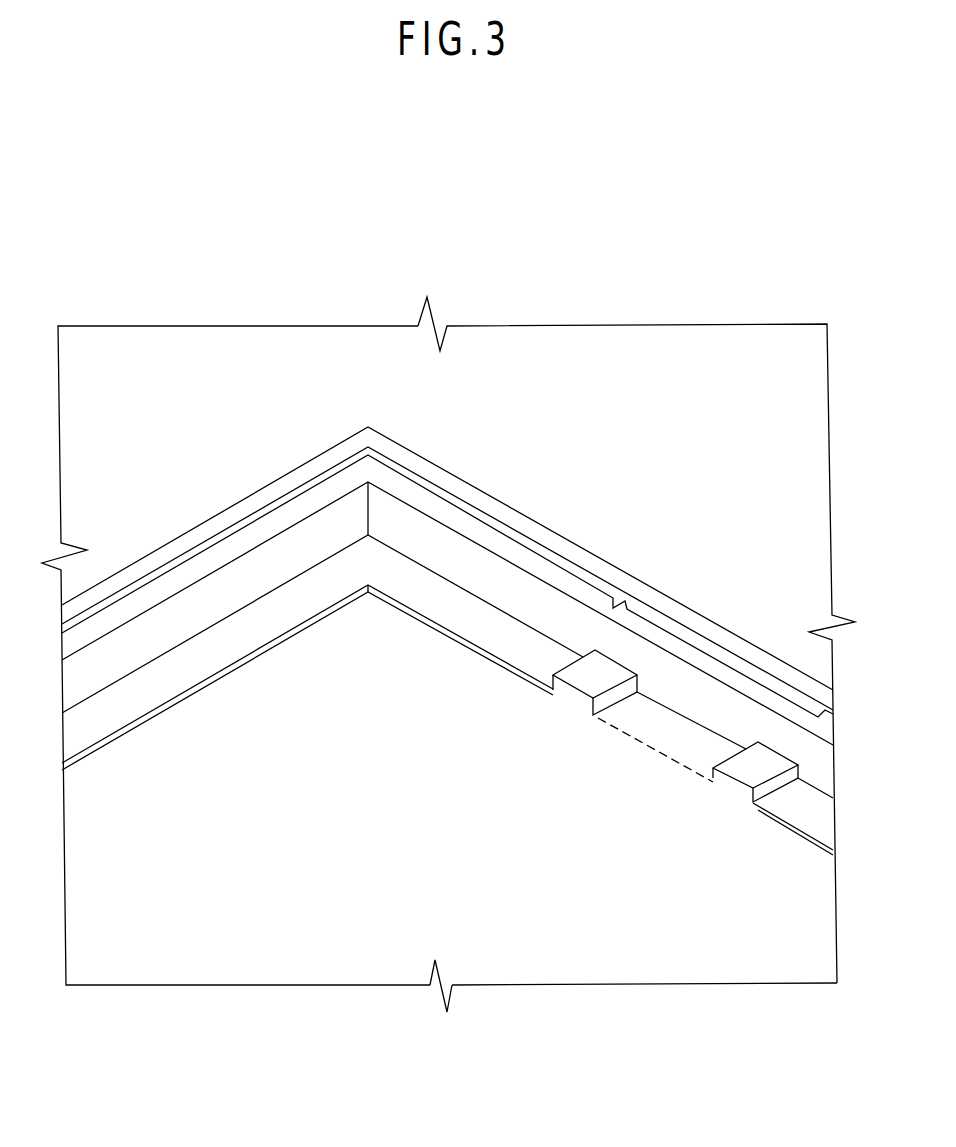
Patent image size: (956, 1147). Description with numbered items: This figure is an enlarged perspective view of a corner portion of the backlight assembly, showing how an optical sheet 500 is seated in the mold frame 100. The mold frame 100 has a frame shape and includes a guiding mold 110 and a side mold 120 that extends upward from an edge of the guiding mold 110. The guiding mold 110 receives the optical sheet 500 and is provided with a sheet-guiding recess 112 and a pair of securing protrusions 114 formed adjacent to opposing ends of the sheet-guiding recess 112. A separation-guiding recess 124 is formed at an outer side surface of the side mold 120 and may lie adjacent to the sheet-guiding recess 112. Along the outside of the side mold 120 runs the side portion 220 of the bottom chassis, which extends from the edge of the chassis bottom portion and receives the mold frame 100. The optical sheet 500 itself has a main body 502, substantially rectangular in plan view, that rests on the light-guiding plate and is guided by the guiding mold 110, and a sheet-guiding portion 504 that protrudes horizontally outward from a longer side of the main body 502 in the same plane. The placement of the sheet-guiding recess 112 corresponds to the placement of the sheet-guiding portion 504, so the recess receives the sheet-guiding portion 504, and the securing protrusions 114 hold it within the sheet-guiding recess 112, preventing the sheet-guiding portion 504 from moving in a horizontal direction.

The mold frame 100 is at (447, 607).
The guiding mold 110 is at (273, 620).
The side mold 120 is at (205, 573).
The sheet-guiding recess 112 is at (643, 724).
The securing protrusion 114 is at (598, 672).
The separation-guiding recess 124 is at (733, 665).
The side portion 220 is at (537, 524).
The optical sheet 500 is at (358, 935).
The main body 502 is at (543, 902).
The sheet-guiding portion 504 is at (690, 755).